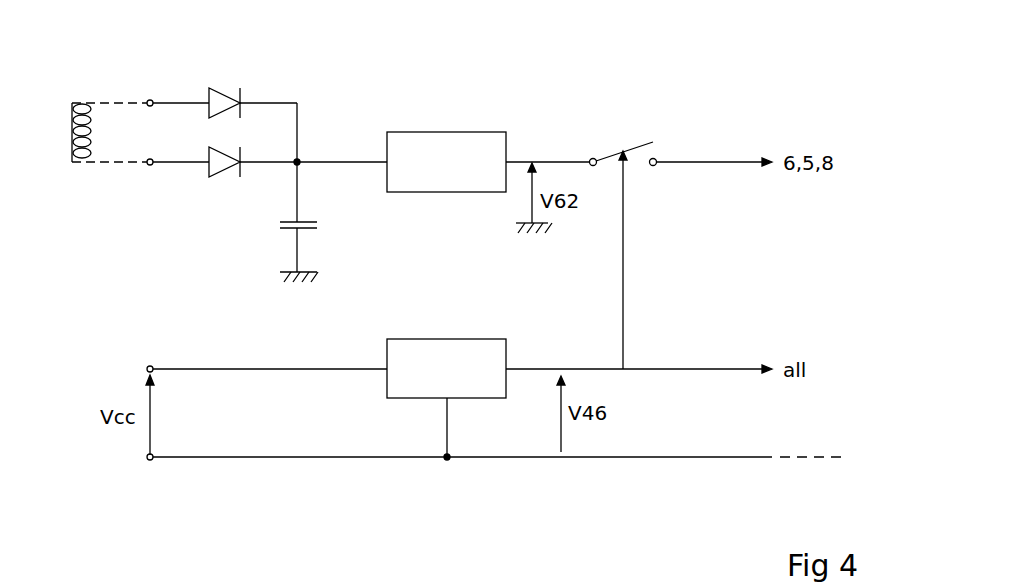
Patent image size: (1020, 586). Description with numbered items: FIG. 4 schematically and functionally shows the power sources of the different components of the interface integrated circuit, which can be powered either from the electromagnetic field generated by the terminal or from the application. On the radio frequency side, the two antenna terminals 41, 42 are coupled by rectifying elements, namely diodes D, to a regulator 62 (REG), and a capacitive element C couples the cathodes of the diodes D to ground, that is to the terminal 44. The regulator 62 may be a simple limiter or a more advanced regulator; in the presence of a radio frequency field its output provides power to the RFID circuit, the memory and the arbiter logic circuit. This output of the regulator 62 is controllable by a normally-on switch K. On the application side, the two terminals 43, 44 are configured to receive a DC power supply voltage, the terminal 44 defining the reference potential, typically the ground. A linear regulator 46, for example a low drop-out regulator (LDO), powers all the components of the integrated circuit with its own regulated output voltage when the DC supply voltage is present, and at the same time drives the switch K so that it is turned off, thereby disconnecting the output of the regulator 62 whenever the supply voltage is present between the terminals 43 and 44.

The terminal 41 is at (150, 100).
The terminal 42 is at (150, 166).
The terminal 43 is at (150, 366).
The terminal 44 is at (298, 248).
The linear regulator 46 is at (455, 339).
The regulator 62 is at (462, 132).
The diodes D is at (220, 97).
The capacitive element C is at (303, 220).
The switch K is at (632, 148).